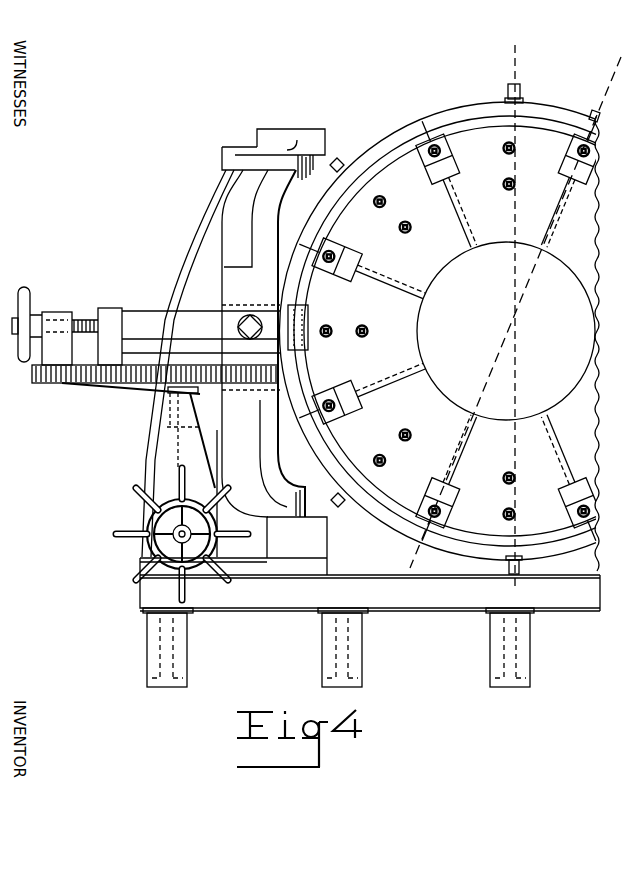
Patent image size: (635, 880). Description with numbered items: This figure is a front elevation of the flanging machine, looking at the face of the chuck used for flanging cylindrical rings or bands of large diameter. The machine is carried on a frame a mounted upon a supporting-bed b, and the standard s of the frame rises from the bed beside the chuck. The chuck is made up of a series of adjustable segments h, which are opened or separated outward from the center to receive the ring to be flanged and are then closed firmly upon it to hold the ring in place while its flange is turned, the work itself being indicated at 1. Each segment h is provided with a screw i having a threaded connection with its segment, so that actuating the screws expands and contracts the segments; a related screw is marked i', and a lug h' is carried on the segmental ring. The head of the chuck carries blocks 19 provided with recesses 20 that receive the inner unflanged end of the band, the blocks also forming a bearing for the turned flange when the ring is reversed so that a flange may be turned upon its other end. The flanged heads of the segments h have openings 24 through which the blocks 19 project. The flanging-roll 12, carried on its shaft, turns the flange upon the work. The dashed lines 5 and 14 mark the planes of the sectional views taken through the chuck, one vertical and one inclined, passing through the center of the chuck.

The rotary work table 1 is at (506, 331).
The section line 5 5 is at (515, 315).
The flanging-roll 12 is at (308, 313).
The section line 14 14 is at (511, 312).
The blocks 19 is at (442, 151).
The recesses 20 is at (418, 157).
The recesses or openings 24 is at (446, 180).
The segments h is at (439, 319).
The ring support lug h' is at (316, 356).
The screw i is at (338, 150).
The ring bolt i' is at (514, 81).
The standard column s is at (233, 343).
The frame a is at (255, 546).
The supporting-bed b is at (370, 622).